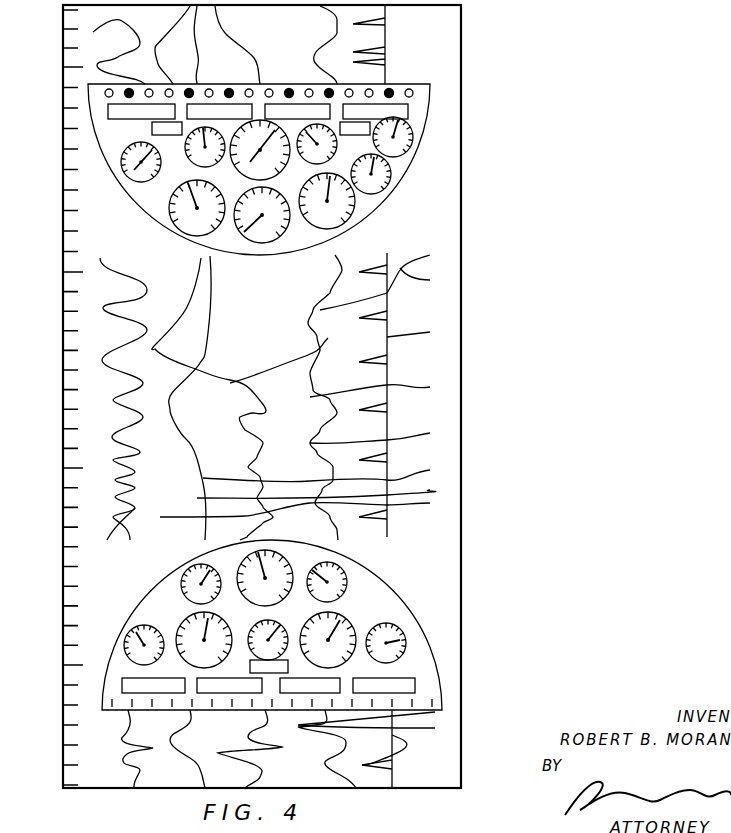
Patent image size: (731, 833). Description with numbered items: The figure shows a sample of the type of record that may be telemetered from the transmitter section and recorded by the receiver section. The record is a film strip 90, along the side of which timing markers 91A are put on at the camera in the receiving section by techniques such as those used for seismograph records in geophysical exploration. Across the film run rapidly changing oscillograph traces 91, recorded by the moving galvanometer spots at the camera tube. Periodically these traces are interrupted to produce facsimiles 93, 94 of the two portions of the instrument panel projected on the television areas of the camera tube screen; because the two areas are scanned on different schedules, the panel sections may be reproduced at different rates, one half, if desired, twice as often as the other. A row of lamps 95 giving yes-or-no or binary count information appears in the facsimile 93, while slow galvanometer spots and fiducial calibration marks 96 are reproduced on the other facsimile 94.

The film strip 90 is at (465, 262).
The oscillograph traces 91 is at (275, 397).
The timing markers 91A is at (45, 280).
The facsimile 93 is at (349, 165).
The facsimile 94 is at (407, 624).
The row of lamps 95 is at (416, 93).
The slow galvanometer indications or fiducial calibration marks 96 is at (404, 603).